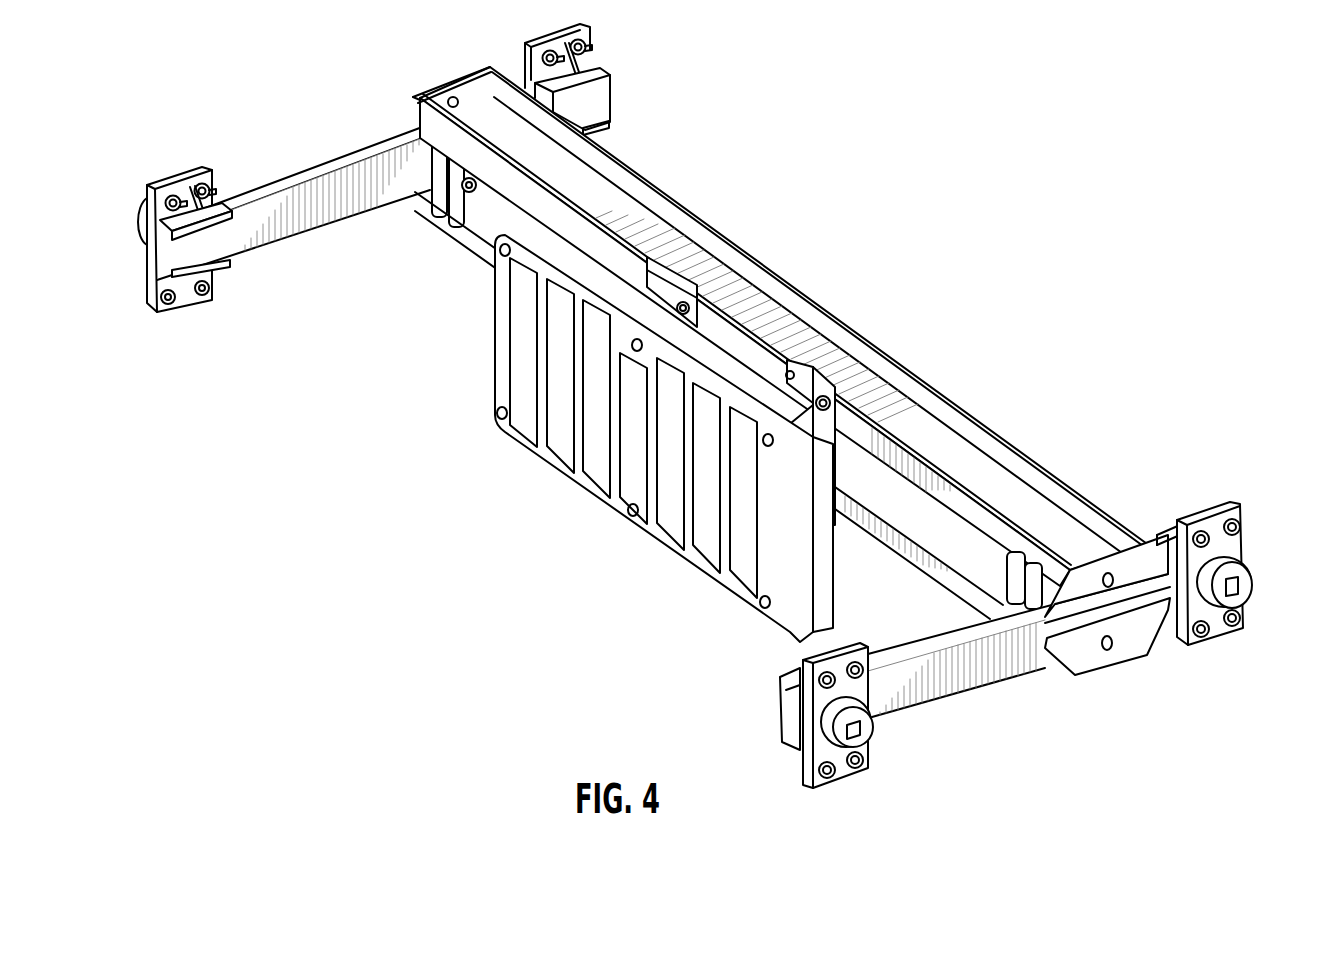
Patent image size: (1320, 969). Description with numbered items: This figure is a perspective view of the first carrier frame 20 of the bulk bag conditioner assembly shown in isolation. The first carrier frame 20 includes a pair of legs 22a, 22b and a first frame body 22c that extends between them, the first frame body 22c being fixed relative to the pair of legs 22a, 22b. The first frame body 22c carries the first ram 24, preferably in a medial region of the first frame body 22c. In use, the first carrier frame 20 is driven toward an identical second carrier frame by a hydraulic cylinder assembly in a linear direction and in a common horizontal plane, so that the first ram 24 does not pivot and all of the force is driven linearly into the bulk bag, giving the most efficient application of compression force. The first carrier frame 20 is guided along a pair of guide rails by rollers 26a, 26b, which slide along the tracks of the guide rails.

The first carrier frame 20 is at (697, 227).
The leg 22a is at (997, 650).
The leg 22b is at (387, 177).
The first frame body 22c is at (805, 335).
The first ram 24 is at (562, 392).
The roller 26a is at (1237, 577).
The roller 26b is at (840, 732).